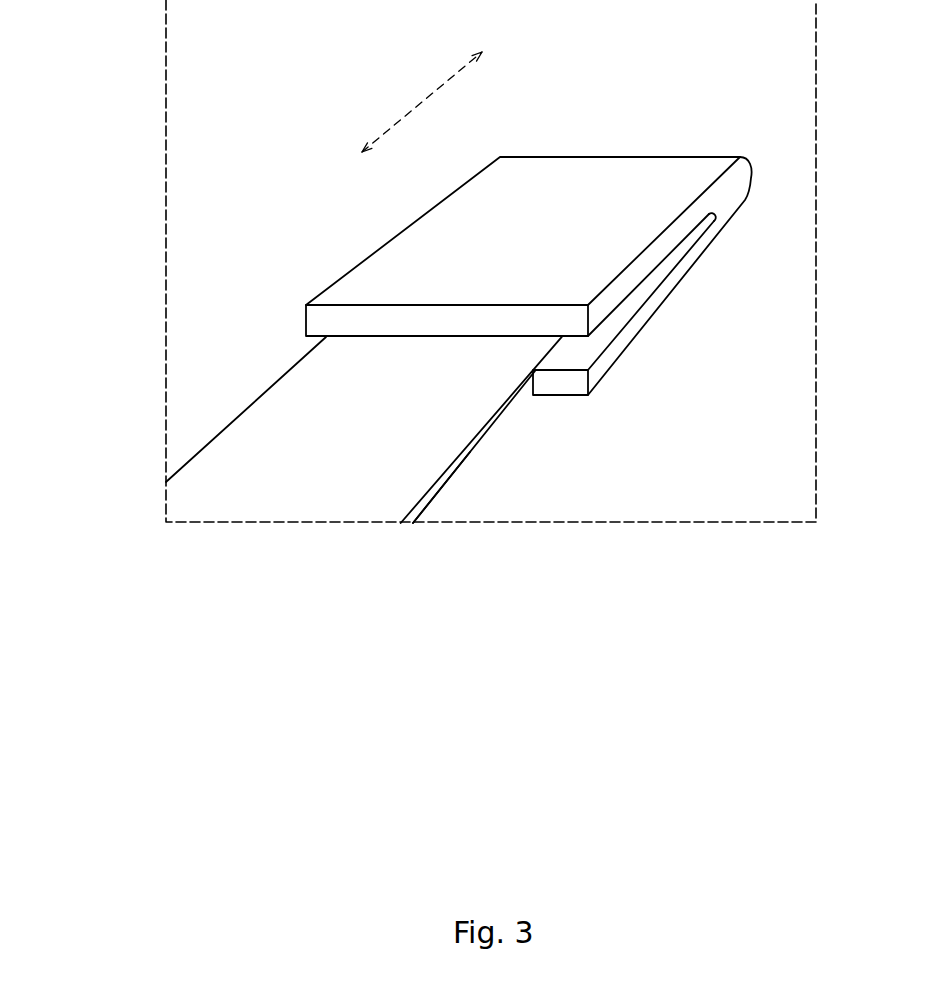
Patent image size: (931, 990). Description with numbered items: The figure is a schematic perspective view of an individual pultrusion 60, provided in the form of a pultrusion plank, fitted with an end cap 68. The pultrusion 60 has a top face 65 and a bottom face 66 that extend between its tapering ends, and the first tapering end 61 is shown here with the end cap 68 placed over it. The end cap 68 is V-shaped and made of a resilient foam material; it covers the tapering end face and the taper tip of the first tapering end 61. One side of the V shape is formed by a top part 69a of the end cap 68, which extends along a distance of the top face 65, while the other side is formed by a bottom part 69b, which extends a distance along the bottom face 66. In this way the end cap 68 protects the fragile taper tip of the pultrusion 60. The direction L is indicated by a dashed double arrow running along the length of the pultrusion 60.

The pultrusion 60 is at (233, 495).
The first tapering end 61 is at (506, 406).
The top face 65 is at (267, 430).
The bottom face 66 is at (432, 503).
The end cap 68 is at (486, 259).
The top part 69a is at (533, 188).
The bottom part 69b is at (610, 365).
The longitudinal direction L is at (393, 128).